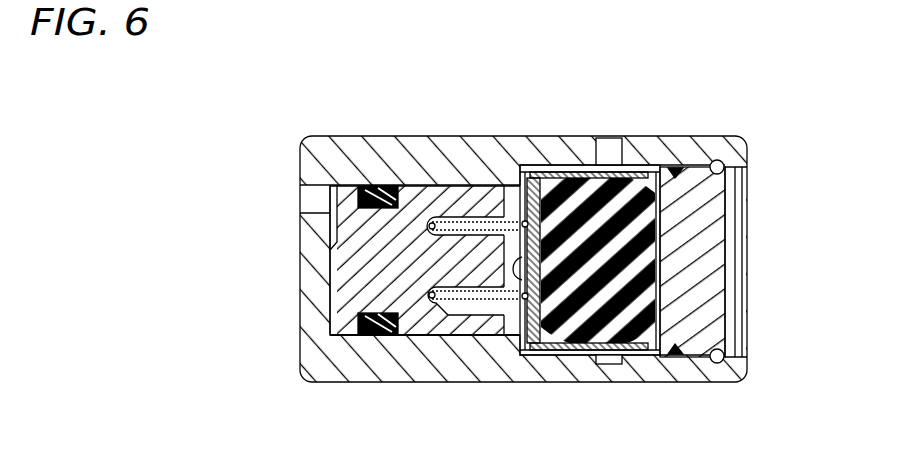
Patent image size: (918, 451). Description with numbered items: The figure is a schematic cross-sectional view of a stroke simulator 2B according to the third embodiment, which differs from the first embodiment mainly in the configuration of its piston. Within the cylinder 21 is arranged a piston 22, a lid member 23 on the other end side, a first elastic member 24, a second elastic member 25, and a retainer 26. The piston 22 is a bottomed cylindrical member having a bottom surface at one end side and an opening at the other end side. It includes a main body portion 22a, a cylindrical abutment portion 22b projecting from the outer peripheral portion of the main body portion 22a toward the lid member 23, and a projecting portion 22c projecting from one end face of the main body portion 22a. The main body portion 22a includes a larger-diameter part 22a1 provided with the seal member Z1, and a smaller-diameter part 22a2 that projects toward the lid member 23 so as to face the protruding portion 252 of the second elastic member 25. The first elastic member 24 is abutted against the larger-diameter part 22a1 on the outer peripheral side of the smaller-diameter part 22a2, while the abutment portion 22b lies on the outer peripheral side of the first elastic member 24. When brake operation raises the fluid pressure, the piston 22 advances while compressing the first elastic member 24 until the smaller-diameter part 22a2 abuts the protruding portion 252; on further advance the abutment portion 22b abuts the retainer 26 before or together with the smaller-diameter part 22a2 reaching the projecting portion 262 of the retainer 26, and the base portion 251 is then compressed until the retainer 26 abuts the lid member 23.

The stroke simulator 2B is at (237, 126).
The cylinder 21 is at (298, 243).
The piston 22 is at (338, 297).
The main body portion 22a is at (500, 101).
The larger-diameter part 22a1 is at (398, 212).
The smaller-diameter part 22a2 is at (448, 224).
The abutment portion 22b is at (476, 336).
The projecting portion 22c is at (332, 263).
The lid member 23 is at (714, 294).
The first elastic member 24 is at (496, 338).
The second elastic member 25 is at (661, 168).
The base portion 251 is at (623, 172).
The protruding portion 252 is at (524, 160).
The retainer 26 is at (627, 367).
The projecting portion 262 is at (519, 340).
The seal member Z1 is at (378, 336).